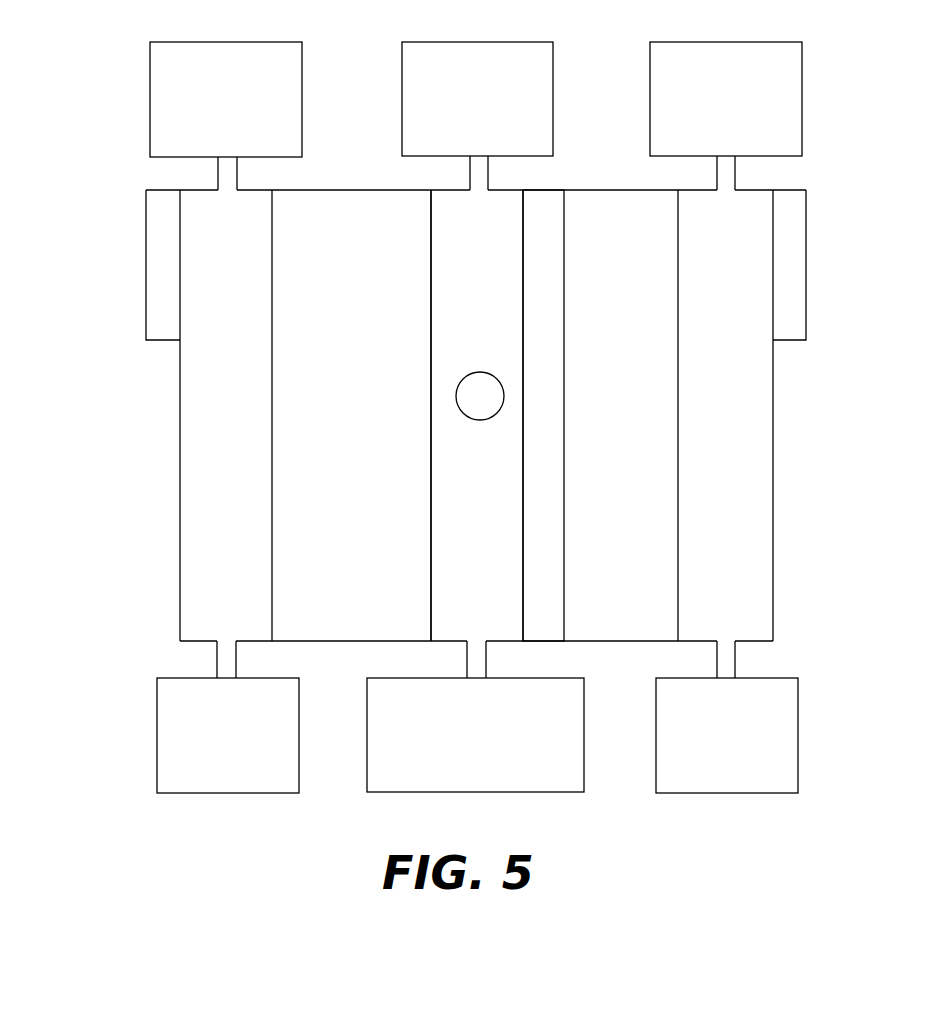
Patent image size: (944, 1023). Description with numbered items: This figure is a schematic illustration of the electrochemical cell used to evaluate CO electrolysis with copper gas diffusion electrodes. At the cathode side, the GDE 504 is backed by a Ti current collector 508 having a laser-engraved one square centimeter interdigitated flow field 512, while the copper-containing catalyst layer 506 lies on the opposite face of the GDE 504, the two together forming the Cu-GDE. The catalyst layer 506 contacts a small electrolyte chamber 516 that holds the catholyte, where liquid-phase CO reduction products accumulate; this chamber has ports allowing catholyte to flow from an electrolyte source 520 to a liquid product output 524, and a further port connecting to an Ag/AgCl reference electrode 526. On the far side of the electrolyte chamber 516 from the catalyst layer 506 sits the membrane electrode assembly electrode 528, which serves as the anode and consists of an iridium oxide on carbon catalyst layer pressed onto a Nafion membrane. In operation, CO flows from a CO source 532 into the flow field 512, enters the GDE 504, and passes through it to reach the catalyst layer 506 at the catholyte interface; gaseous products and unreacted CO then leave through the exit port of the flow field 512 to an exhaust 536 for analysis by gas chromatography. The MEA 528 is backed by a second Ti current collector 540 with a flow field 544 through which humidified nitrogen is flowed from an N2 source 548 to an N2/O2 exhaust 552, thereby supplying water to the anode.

The gas diffusion electrode (GDE) 504 is at (631, 625).
The copper-containing catalyst layer 506 is at (556, 213).
The Ti current collector 508 is at (788, 325).
The interdigitated flow field 512 is at (757, 430).
The electrolyte chamber 516 is at (453, 608).
The electrolyte source 520 is at (475, 716).
The liquid product output 524 is at (477, 116).
The Ag/AgCl reference electrode 526 is at (470, 372).
The membrane electrode assembly (MEA) electrode 528 is at (311, 210).
The CO source 532 is at (726, 116).
The exhaust 536 is at (727, 717).
The second Ti current collector 540 is at (155, 250).
The flow field 544 is at (195, 518).
The N2 source 548 is at (228, 717).
The N2/O2 exhaust 552 is at (226, 116).